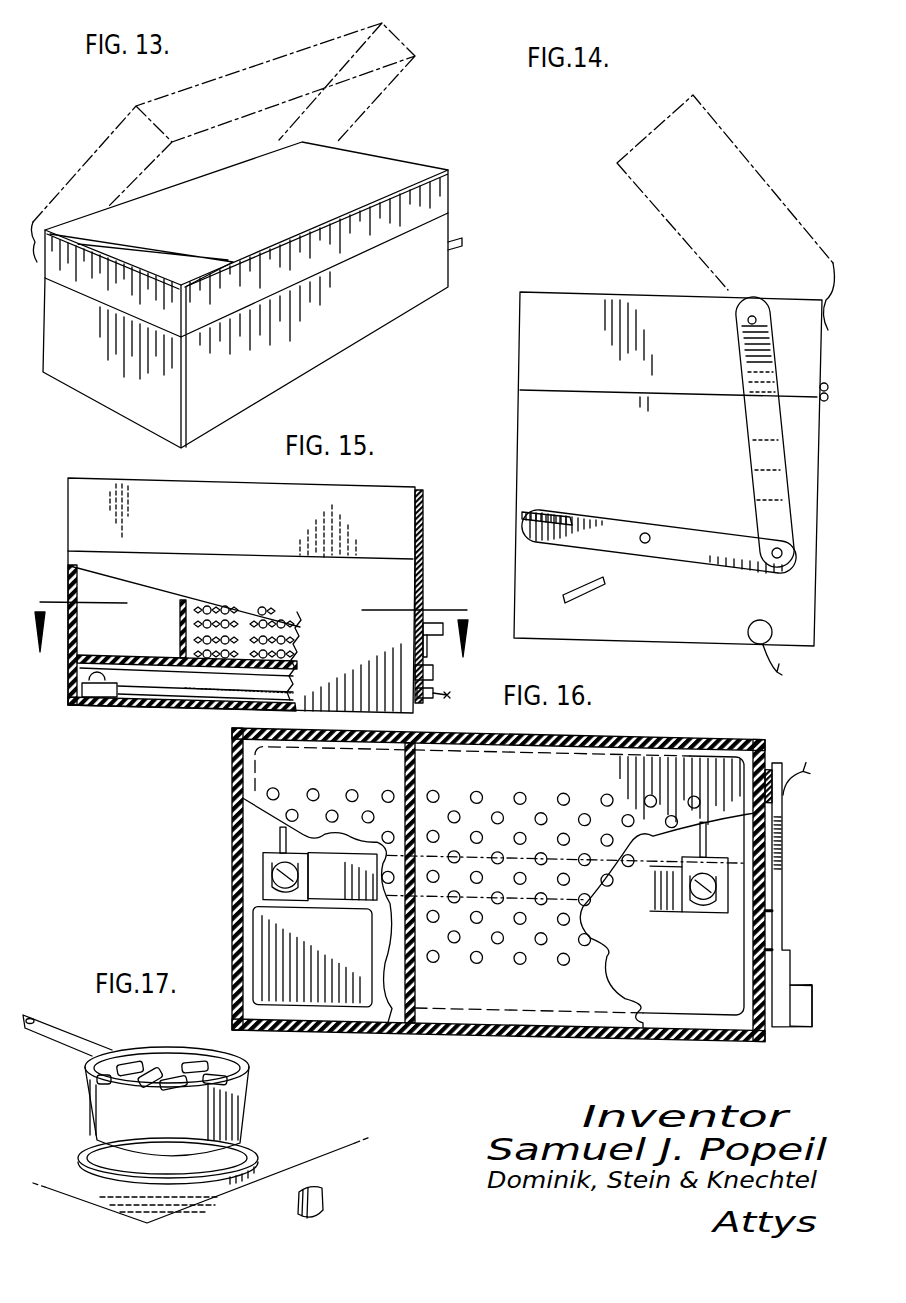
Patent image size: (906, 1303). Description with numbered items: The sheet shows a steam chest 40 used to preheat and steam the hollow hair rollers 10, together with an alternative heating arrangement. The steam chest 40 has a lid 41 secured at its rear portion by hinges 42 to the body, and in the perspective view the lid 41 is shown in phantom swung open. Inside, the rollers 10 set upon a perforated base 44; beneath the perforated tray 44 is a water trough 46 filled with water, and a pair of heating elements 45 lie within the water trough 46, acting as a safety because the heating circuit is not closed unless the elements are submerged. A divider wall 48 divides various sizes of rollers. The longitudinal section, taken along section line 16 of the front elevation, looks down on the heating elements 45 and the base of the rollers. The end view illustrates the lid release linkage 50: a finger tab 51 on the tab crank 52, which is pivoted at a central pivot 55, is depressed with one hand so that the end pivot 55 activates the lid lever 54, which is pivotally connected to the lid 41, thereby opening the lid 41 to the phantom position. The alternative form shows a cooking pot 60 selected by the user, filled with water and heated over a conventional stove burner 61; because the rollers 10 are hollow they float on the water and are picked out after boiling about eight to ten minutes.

In FIG. 15, the roller 10 is at (263, 617).
In FIG. 17, the roller 10 is at (190, 1063).
In FIG. 15, the section line 16— 16 is at (462, 590).
In FIG. 13, the steam chest 40 is at (264, 235).
In FIG. 14, the steam chest 40 is at (643, 385).
In FIG. 15, the steam chest 40 is at (253, 594).
In FIG. 16, the steam chest 40 is at (501, 870).
In FIG. 13, the lid 41 is at (366, 170).
In FIG. 14, the lid 41 is at (753, 177).
In FIG. 15, the lid 41 is at (120, 490).
In FIG. 13, the hinges 42 is at (42, 280).
In FIG. 14, the hinges 42 is at (822, 386).
In FIG. 15, the hinges 42 is at (241, 632).
In FIG. 16, the hinges 42 is at (498, 885).
In FIG. 15, the perforated base 44 is at (137, 638).
In FIG. 16, the perforated base 44 is at (692, 747).
In FIG. 15, the heating elements 45 is at (183, 676).
In FIG. 16, the heating elements 45 is at (353, 880).
In FIG. 15, the water trough 46 is at (133, 685).
In FIG. 16, the water trough 46 is at (263, 922).
In FIG. 15, the divider wall 48 is at (183, 613).
In FIG. 16, the divider wall 48 is at (413, 982).
In FIG. 14, the lid release linkage 50 is at (659, 453).
In FIG. 13, the finger tab 51 is at (458, 242).
In FIG. 14, the finger tab 51 is at (545, 510).
In FIG. 15, the finger tab 51 is at (420, 622).
In FIG. 16, the finger tab 51 is at (793, 998).
In FIG. 14, the tab crank 52 is at (681, 552).
In FIG. 14, the lid lever 54 is at (757, 415).
In FIG. 15, the lid lever 54 is at (423, 550).
In FIG. 16, the lid lever 54 is at (791, 830).
In FIG. 14, the pivot 55 is at (748, 320).
In FIG. 16, the pivot 55 is at (766, 898).
In FIG. 17, the pot 60 is at (230, 1113).
In FIG. 17, the stove burner 61 is at (247, 1155).